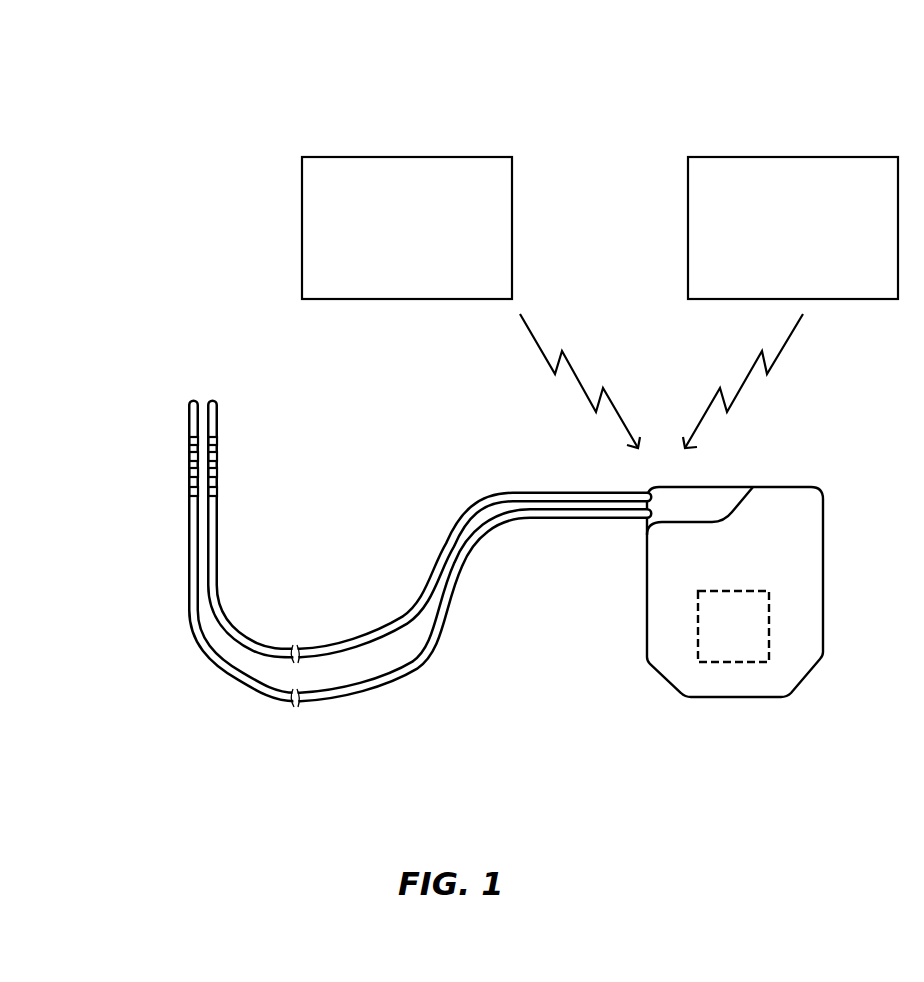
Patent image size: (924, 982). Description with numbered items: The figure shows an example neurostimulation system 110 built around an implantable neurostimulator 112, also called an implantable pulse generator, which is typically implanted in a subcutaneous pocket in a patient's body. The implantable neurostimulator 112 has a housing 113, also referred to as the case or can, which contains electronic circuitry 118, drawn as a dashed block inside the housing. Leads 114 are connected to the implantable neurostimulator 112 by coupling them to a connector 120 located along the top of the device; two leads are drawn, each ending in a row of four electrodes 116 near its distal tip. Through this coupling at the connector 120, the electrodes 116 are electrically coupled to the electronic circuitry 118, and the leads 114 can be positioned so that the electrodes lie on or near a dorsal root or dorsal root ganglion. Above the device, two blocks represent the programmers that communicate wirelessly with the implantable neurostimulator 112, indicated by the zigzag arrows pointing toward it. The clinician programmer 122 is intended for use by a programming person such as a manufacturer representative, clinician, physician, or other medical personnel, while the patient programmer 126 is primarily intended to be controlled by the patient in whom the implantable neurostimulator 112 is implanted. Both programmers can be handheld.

The neurostimulation system 110 is at (150, 78).
The implantable neurostimulator 112 is at (755, 565).
The housing 113 is at (812, 630).
The leads 114 is at (230, 667).
The electrodes 116 is at (189, 491).
The electronic circuitry 118 is at (752, 591).
The connector 120 is at (705, 487).
The clinician programmer 122 is at (390, 262).
The patient programmer 126 is at (776, 262).